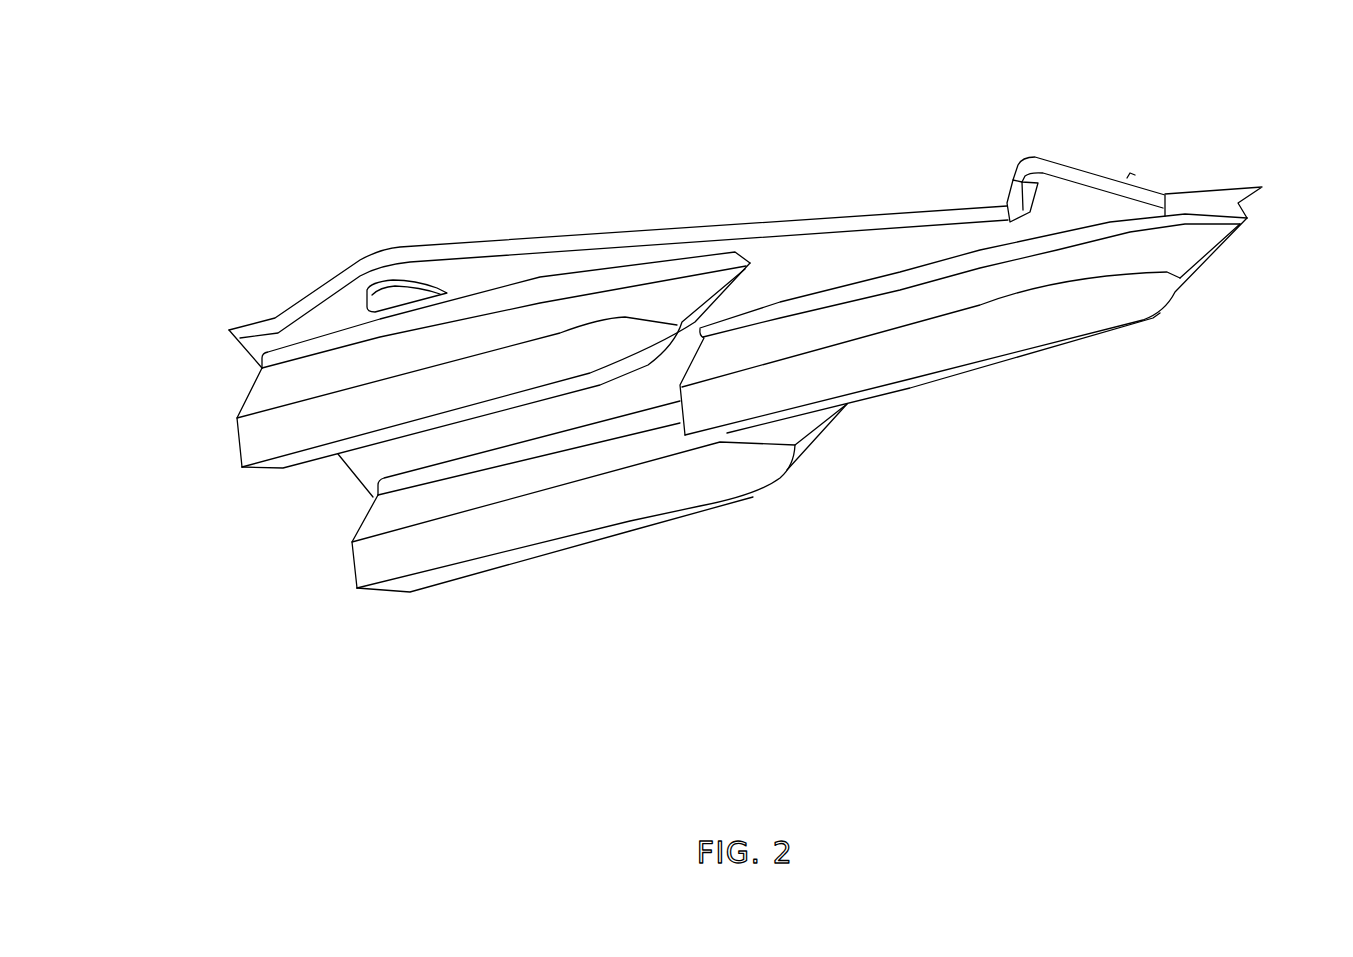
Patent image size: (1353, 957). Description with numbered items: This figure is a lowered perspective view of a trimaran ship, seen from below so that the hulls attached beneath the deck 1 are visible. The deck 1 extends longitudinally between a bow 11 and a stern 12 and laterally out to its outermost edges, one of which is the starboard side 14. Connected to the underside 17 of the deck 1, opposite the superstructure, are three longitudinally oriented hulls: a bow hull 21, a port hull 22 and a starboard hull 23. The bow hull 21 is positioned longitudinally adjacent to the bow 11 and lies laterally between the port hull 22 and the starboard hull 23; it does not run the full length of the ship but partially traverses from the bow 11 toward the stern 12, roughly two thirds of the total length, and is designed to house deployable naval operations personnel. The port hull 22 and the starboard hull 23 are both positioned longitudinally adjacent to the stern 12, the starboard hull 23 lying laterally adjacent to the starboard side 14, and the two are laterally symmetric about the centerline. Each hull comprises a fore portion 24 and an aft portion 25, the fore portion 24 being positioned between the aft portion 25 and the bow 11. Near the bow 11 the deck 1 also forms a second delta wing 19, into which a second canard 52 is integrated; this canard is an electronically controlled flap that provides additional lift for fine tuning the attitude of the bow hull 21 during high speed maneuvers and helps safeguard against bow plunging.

The deck 1 is at (533, 150).
The bow 11 is at (1308, 177).
The stern 12 is at (292, 505).
The starboard side 14 is at (900, 205).
The underside 17 is at (797, 268).
The second delta wing 19 is at (1065, 165).
The bow hull 21 is at (1068, 321).
The port hull 22 is at (540, 525).
The starboard hull 23 is at (260, 400).
The fore portion 24 is at (752, 278).
The aft portion 25 is at (207, 452).
The second canard 52 is at (1010, 185).